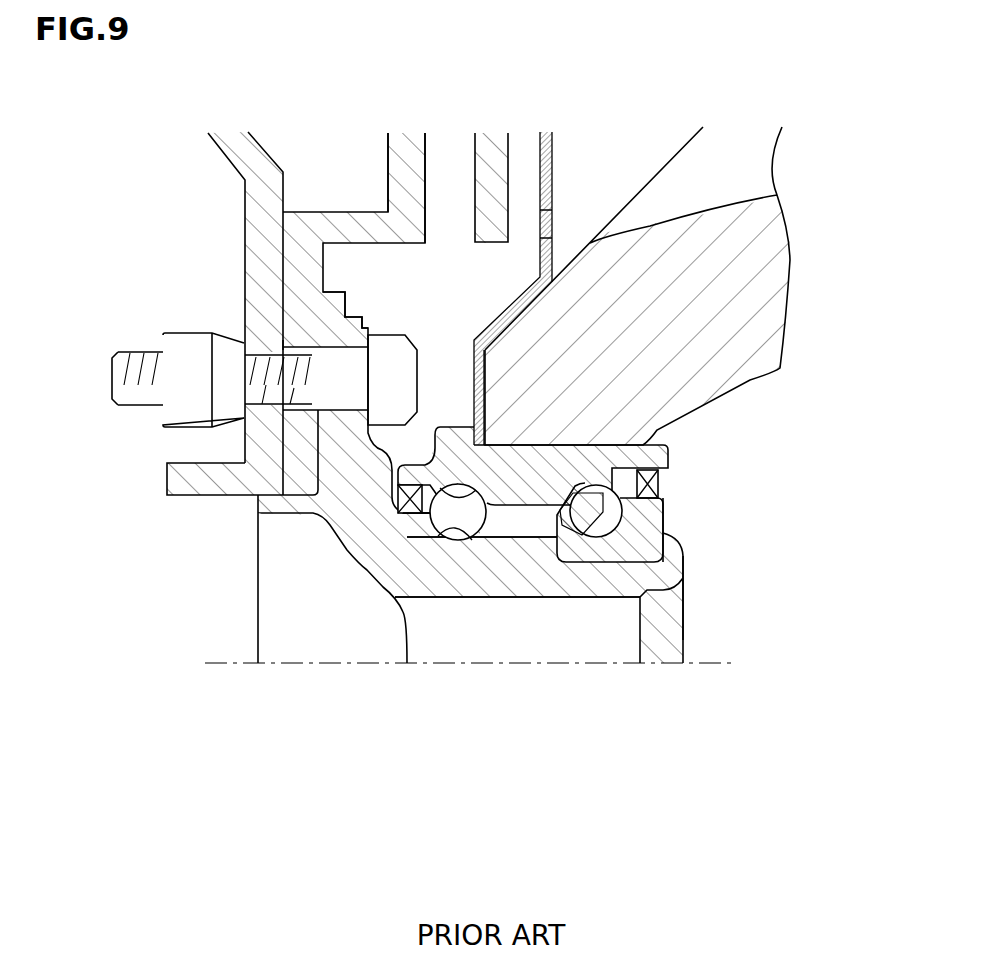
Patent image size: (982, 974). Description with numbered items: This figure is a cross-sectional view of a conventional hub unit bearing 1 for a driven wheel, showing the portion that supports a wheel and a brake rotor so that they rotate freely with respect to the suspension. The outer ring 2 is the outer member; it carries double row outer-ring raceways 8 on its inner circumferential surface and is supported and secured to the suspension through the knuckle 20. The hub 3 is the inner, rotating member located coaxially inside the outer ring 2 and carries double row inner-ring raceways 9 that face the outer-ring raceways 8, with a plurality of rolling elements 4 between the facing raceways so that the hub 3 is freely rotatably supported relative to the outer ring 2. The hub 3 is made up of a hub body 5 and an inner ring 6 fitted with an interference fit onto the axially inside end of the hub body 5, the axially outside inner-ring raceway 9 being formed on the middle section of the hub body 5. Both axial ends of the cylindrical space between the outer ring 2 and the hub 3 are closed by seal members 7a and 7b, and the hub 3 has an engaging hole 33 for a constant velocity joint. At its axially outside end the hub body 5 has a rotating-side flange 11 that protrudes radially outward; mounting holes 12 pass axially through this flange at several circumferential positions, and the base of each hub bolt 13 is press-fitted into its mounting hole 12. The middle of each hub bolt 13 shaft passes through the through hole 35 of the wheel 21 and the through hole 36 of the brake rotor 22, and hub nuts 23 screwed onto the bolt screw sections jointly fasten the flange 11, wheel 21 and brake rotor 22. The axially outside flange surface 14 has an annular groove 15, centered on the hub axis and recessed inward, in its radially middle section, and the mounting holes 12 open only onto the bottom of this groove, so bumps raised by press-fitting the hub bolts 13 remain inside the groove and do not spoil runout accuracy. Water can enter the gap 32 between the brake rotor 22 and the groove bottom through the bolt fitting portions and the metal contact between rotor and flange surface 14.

The hub unit bearing 1 is at (690, 692).
The outer ring 2 is at (658, 455).
The hub 3 is at (778, 535).
The rolling elements 4 is at (653, 488).
The hub body 5 is at (658, 577).
The inner ring 6 is at (658, 520).
The seal member 7a is at (657, 485).
The seal member 7b is at (397, 510).
The outer-ring raceways 8 is at (563, 482).
The inner-ring raceways 9 is at (590, 535).
The rotating-side flange 11 is at (340, 310).
The mounting holes 12 is at (285, 400).
The hub bolts 13 is at (396, 335).
The flange surface 14 is at (313, 340).
The annular groove 15 is at (320, 395).
The knuckle 20 is at (778, 290).
The wheel 21 is at (238, 155).
The brake rotor 22 is at (402, 162).
The hub nuts 23 is at (183, 428).
The gap 32 is at (325, 352).
The engaging hole 33 is at (530, 597).
The through hole 35 is at (325, 390).
The through hole 36 is at (263, 372).